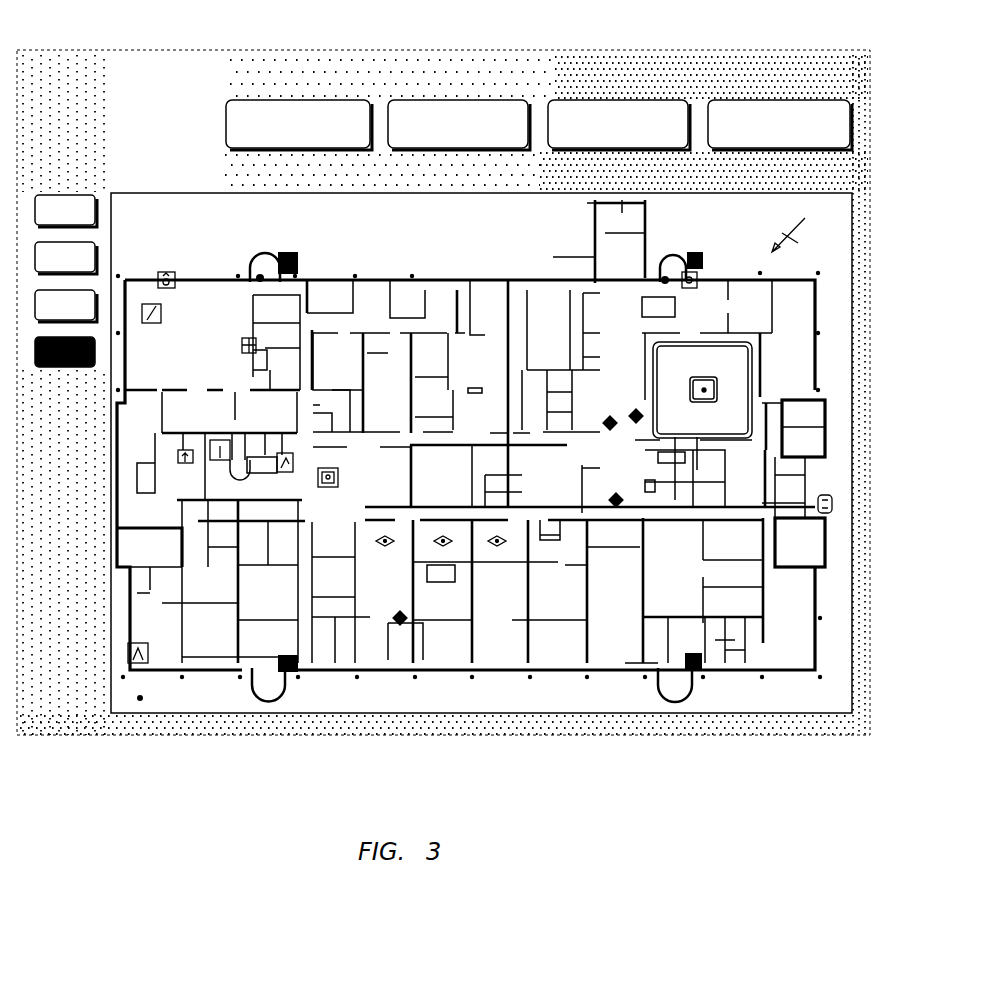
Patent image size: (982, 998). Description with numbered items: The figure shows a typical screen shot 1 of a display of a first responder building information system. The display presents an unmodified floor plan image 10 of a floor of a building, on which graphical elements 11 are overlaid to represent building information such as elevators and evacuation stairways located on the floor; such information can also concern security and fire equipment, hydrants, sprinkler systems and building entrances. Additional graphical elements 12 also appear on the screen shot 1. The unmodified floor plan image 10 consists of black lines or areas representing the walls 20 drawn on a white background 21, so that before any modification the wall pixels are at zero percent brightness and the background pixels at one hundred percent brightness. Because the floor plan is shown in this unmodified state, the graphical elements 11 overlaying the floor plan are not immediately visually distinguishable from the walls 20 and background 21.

The screen shot 1 is at (517, 50).
The unmodified floor plan image 10 is at (335, 279).
The graphical elements 11 is at (177, 270).
The graphical elements 12 is at (55, 190).
The walls 20 is at (482, 282).
The white background 21 is at (405, 241).